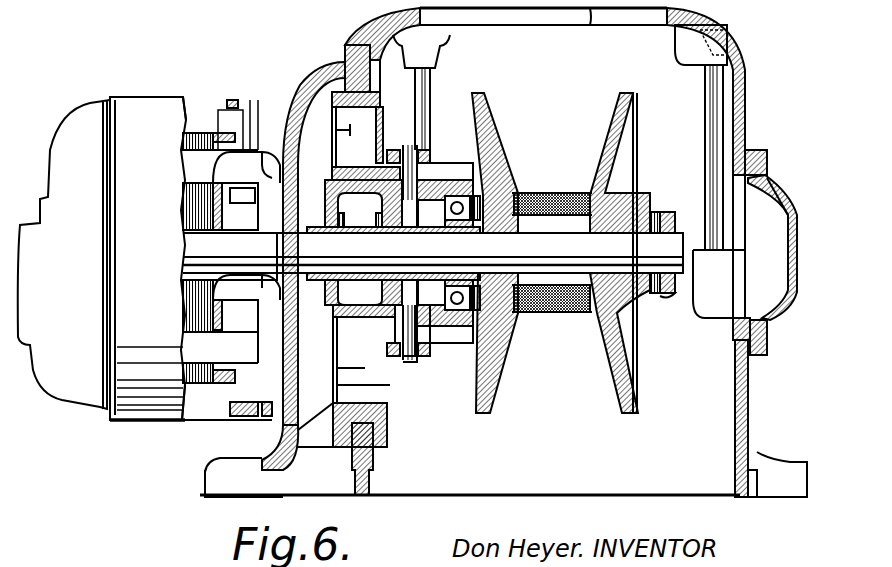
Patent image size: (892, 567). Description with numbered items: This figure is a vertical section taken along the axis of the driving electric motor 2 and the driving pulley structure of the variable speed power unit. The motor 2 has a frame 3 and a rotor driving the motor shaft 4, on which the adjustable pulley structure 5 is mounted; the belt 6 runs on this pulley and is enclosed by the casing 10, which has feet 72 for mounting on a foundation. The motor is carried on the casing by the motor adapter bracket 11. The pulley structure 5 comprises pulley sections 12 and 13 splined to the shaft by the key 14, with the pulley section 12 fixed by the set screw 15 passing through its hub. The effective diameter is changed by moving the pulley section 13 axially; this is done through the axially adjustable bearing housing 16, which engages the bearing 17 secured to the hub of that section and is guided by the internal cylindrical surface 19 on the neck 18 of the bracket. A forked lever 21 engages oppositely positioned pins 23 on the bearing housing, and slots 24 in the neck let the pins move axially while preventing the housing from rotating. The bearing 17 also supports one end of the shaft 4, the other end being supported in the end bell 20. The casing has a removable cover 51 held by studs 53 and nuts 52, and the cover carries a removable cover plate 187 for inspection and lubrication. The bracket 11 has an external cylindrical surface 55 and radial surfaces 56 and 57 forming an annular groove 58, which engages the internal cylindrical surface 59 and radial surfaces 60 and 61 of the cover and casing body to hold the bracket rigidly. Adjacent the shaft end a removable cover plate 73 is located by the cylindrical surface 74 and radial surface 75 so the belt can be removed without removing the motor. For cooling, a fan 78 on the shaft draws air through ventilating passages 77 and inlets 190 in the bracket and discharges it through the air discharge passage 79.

The driving electric motor 2 is at (157, 245).
The frame 3 is at (135, 97).
The motor shaft 4 is at (179, 264).
The adjustable pulley structure 5 is at (558, 356).
The belt 6 is at (558, 193).
The casing 10 is at (752, 393).
The motor adapter bracket 11 is at (295, 65).
The pulley section 12 is at (602, 360).
The pulley section 13 is at (495, 362).
The key 14 is at (555, 272).
The set screw 15 is at (663, 212).
The axially adjustable bearing housing 16 is at (335, 180).
The bearing 17 is at (462, 330).
The neck 18 is at (308, 116).
The internal cylindrical surface 19 is at (316, 335).
The end bell 20 is at (58, 135).
The forked lever 21 is at (436, 358).
The pins 23 is at (412, 148).
The slots 24 is at (437, 172).
The removable cover 51 is at (745, 78).
The nuts 52 is at (735, 28).
The studs 53 is at (705, 135).
The external cylindrical surface 55 is at (338, 420).
The radial surface 56 is at (340, 448).
The radial surface 57 is at (387, 440).
The annular groove 58 is at (350, 480).
The internal cylindrical surface 59 is at (345, 50).
The radial surface 60 is at (345, 62).
The radial surface 61 is at (375, 62).
The feet 72 is at (205, 472).
The removable cover plate 73 is at (788, 215).
The cylindrical surface 74 is at (725, 318).
The radial surface 75 is at (735, 345).
The ventilating passages 77 is at (336, 385).
The fan 78 is at (222, 193).
The air discharge passage 79 is at (265, 425).
The removable cover plate 187 is at (580, 30).
The inlets 190 is at (270, 240).